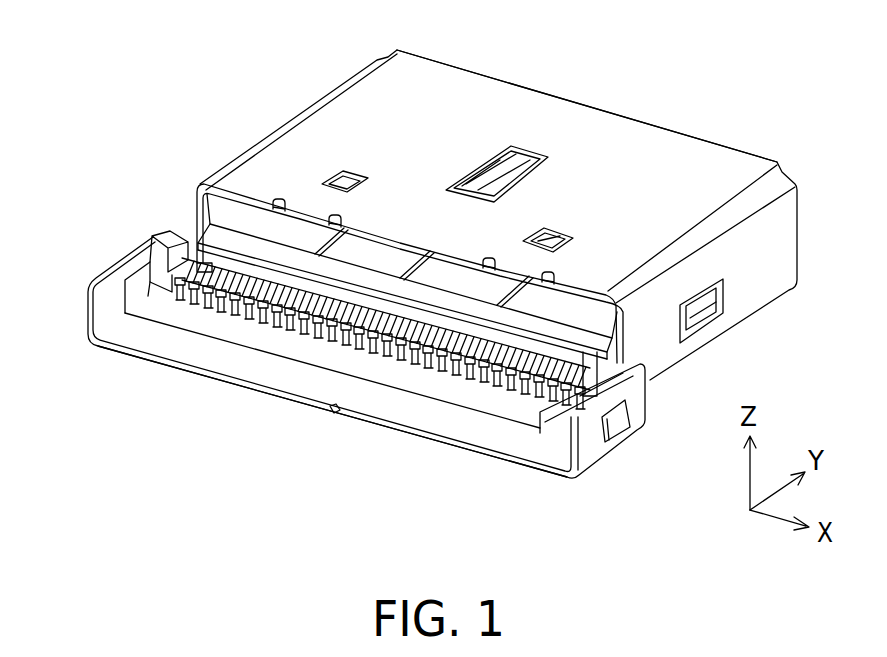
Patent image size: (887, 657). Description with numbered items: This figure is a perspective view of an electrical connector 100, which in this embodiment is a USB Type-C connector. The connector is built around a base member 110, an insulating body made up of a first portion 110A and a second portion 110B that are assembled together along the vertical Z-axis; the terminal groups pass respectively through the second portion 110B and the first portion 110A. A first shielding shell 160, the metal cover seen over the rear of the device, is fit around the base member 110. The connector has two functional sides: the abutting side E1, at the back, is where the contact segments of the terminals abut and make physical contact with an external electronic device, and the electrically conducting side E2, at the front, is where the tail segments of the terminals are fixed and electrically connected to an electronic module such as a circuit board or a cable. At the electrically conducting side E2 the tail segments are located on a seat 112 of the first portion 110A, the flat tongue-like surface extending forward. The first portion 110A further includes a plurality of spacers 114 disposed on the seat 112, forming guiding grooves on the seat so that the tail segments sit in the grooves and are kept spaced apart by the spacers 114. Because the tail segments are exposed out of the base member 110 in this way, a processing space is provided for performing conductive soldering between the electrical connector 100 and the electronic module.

The electrical connector 100 is at (152, 510).
The base member 110 is at (101, 22).
The first portion 110A is at (178, 343).
The second portion 110B is at (237, 221).
The seat 112 is at (350, 358).
The spacers 114 is at (500, 370).
The first shielding shell 160 is at (760, 308).
The abutting side E1 is at (641, 82).
The electrically conducting side E2 is at (365, 454).